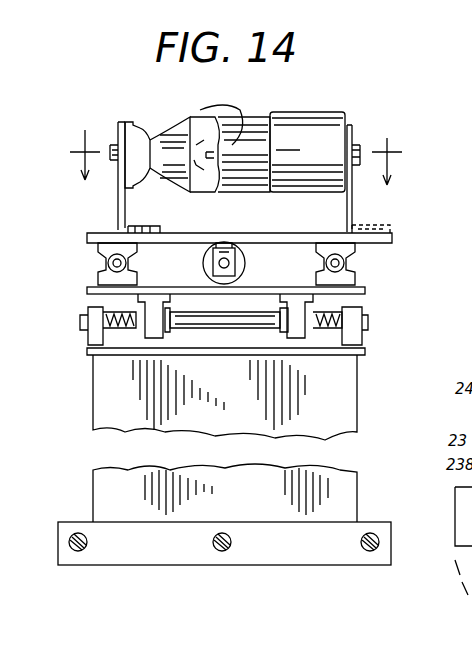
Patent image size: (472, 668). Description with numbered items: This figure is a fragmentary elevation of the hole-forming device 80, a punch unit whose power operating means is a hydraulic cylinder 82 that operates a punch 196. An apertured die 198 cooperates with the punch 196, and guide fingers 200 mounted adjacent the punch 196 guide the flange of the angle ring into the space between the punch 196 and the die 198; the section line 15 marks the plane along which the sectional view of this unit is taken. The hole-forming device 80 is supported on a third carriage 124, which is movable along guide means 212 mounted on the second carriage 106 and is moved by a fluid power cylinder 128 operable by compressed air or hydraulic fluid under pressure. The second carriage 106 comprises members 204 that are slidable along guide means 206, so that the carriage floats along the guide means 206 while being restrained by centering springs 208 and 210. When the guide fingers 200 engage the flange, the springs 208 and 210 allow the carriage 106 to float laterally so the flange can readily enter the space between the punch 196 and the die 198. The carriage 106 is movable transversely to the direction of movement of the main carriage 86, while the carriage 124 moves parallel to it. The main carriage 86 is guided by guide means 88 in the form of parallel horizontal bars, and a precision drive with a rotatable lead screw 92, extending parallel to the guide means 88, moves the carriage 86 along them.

The hole-forming device 80 is at (117, 90).
The section line 15— 15 is at (228, 163).
The apertured die 198 is at (180, 118).
The guide fingers 200 is at (205, 118).
The punch 196 is at (238, 118).
The hydraulic cylinder 82 is at (318, 125).
The third carriage 124 is at (395, 240).
The guide means 212 is at (104, 262).
The fluid power cylinder 128 is at (248, 260).
The second carriage 106 is at (366, 290).
The members 204 is at (152, 340).
The guide means 206 is at (222, 340).
The centering spring 208 is at (105, 340).
The centering spring 210 is at (340, 340).
The main carriage 86 is at (360, 428).
The guide means 88 is at (82, 551).
The lead screw 92 is at (218, 551).